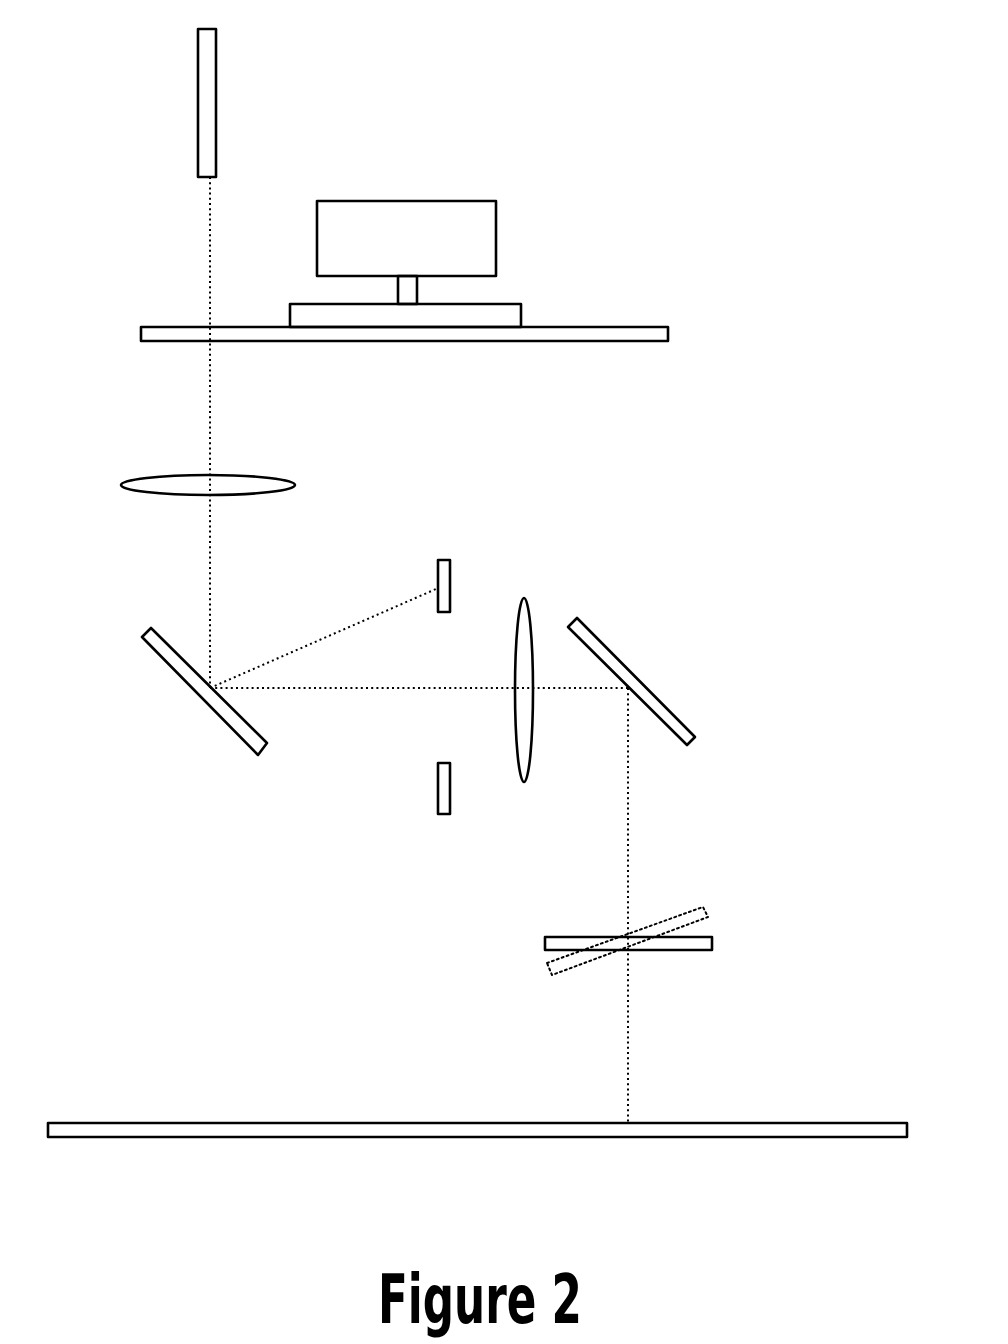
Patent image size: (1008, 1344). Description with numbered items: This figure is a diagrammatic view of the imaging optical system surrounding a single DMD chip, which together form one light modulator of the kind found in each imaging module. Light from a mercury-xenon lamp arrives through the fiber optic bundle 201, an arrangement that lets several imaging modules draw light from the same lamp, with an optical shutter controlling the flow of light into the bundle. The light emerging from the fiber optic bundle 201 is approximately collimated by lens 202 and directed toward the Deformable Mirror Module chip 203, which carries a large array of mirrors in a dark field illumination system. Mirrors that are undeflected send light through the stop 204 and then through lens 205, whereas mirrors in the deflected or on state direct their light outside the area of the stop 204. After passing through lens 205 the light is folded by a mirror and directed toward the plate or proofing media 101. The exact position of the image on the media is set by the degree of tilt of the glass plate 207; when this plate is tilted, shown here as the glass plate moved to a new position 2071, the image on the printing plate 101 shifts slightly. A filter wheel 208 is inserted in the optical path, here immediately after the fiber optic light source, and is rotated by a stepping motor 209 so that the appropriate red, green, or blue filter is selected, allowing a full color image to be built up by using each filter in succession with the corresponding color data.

The plate or proofing media 101 is at (120, 1124).
The fiber optic bundle 201 is at (217, 86).
The lens 202 is at (295, 482).
The Deformable Mirror Module (DMD) chip 203 is at (267, 742).
The stop 204 is at (447, 559).
The lens 205 is at (523, 598).
The glass plate 207 is at (712, 936).
The new position of glass plate 2071 is at (703, 907).
The filter wheel 208 is at (247, 326).
The stepping motor 209 is at (497, 260).